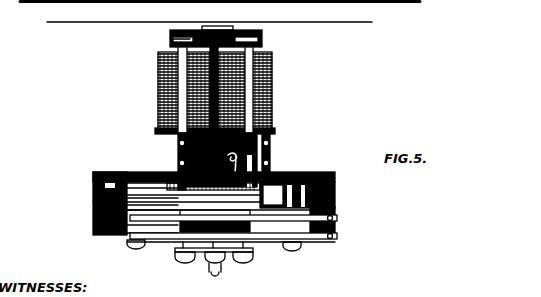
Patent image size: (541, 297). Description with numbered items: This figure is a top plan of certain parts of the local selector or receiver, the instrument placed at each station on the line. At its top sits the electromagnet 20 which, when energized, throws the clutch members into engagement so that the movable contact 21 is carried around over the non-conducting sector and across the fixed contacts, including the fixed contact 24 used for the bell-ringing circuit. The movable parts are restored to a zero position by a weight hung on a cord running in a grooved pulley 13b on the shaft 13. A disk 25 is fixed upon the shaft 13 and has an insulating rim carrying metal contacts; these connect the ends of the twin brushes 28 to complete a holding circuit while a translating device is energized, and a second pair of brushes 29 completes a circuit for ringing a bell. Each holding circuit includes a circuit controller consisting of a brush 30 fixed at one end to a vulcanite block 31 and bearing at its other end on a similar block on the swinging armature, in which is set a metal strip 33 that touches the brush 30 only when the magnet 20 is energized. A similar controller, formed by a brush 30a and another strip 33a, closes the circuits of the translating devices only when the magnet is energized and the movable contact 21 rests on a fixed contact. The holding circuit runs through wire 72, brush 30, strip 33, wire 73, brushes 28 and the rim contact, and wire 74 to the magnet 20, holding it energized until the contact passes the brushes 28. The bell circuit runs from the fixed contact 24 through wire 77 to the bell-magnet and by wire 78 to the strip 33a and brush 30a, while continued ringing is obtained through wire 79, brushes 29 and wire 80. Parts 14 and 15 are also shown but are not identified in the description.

The shaft 13 is at (224, 252).
The grooved pulley 13b is at (262, 214).
The block 14 is at (265, 214).
The bar 15 is at (258, 240).
The electromagnet 20 is at (273, 79).
The movable contact 21 is at (152, 196).
The fixed contact 24 is at (290, 173).
The disk 25 is at (207, 250).
The twin brushes 28 is at (304, 235).
The brushes 29 is at (131, 225).
The brush 30 is at (273, 104).
The brush 30a is at (168, 98).
The vulcanite block 31 is at (178, 153).
The metal strip 33 is at (262, 40).
The metal strip 33a is at (160, 58).
The wire 72 is at (268, 146).
The wire 73 is at (338, 238).
The wire 74 is at (338, 219).
The wire 77 is at (268, 161).
The wire 78 is at (170, 40).
The wire 79 is at (97, 219).
The wire 80 is at (97, 238).